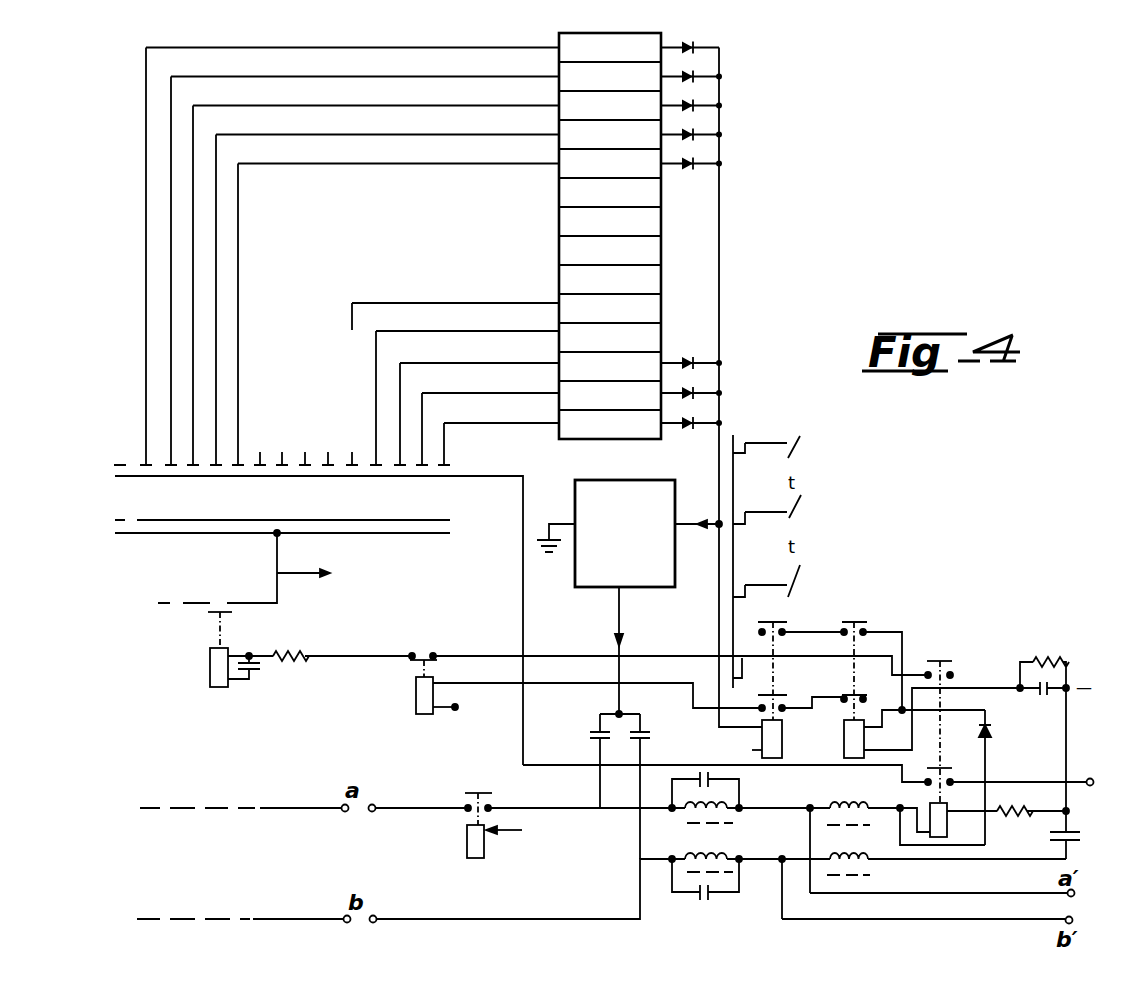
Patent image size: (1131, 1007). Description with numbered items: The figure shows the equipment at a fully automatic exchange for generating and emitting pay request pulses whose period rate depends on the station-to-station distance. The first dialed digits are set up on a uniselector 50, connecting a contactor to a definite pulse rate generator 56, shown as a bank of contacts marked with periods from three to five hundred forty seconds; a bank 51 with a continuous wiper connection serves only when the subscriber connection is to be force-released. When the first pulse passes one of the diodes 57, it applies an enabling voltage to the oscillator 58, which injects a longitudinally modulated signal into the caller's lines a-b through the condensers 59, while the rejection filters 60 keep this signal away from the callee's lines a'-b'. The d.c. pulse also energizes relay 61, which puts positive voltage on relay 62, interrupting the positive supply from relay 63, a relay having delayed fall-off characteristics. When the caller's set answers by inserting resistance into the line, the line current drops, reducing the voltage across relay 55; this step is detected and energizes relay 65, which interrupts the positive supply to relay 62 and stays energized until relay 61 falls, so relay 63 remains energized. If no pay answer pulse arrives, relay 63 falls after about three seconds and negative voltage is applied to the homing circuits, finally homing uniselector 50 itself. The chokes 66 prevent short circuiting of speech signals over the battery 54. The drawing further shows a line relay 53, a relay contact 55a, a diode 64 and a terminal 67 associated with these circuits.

The uniselector 50 is at (328, 511).
The bank 51 is at (309, 560).
The line selector relay 53 is at (467, 839).
The battery 54 is at (1082, 835).
The relay 55 is at (947, 833).
The relay contact 55a is at (738, 786).
The pulse rate generator 56 is at (566, 280).
The diodes 57 is at (696, 170).
The oscillator 58 is at (637, 588).
The condensers 59 is at (617, 785).
The rejection filters 60 is at (739, 845).
The relay 61 is at (790, 690).
The relay 62 is at (416, 690).
The relay 63 is at (210, 662).
The diode 64 is at (970, 777).
The relay 65 is at (917, 690).
The chokes 66 is at (936, 849).
The terminal 67 is at (1029, 764).